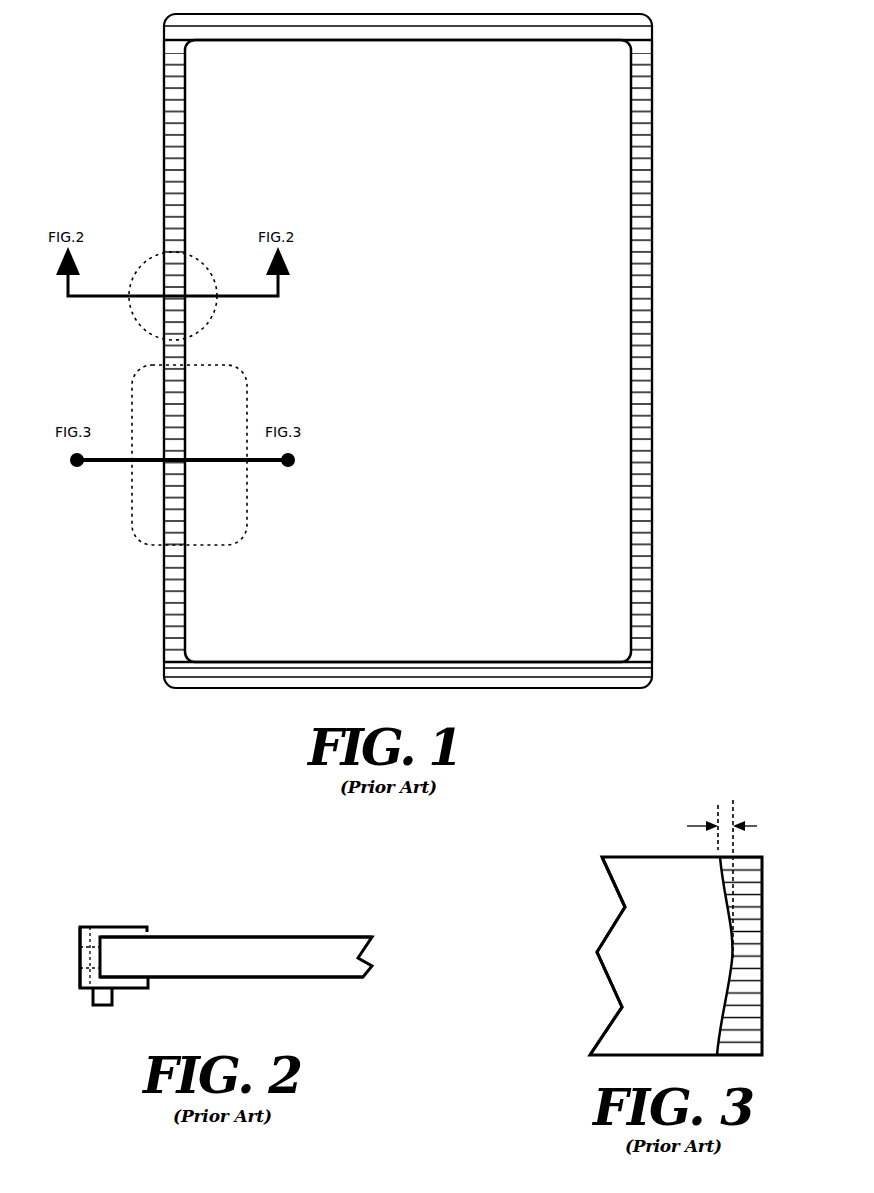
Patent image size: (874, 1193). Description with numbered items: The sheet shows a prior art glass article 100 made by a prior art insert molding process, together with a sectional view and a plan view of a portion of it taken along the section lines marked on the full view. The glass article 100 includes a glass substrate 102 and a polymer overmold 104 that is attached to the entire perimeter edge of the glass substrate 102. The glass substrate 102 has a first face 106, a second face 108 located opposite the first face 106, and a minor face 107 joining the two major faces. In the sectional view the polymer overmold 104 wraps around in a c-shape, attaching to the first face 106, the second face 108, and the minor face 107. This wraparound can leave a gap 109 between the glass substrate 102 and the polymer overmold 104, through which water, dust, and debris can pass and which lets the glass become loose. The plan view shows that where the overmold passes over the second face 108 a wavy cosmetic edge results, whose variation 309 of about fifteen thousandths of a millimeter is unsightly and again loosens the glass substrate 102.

In FIG. 1, the glass article 100 is at (695, 182).
In FIG. 1, the glass substrate 102 is at (216, 163).
In FIG. 2, the glass substrate 102 is at (314, 908).
In FIG. 3, the glass substrate 102 is at (552, 932).
In FIG. 1, the polymer overmold 104 is at (648, 500).
In FIG. 2, the polymer overmold 104 is at (100, 927).
In FIG. 3, the polymer overmold 104 is at (762, 950).
In FIG. 1, the first face 106 is at (410, 182).
In FIG. 2, the first face 106 is at (208, 937).
In FIG. 2, the minor face 107 is at (100, 957).
In FIG. 2, the second face 108 is at (270, 977).
In FIG. 3, the second face 108 is at (670, 955).
In FIG. 2, the gap 109 is at (156, 930).
In FIG. 3, the variation 309 is at (752, 822).